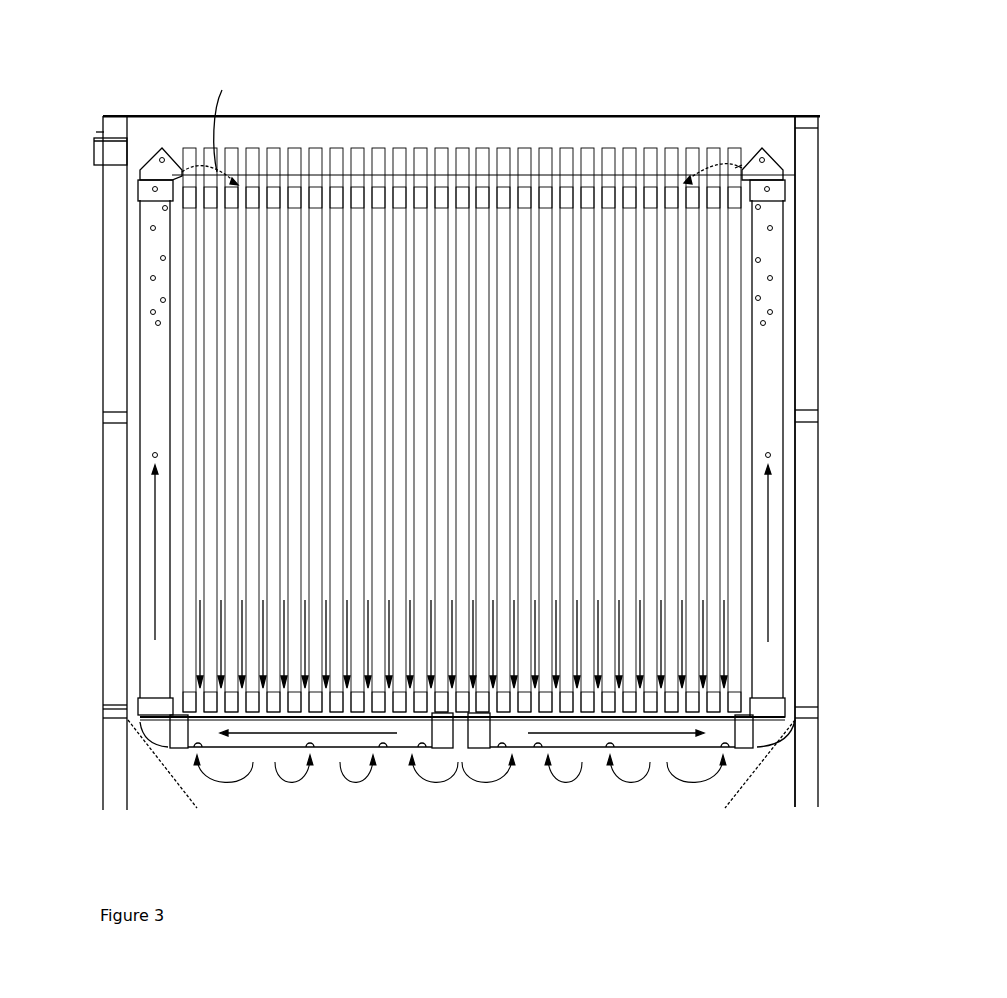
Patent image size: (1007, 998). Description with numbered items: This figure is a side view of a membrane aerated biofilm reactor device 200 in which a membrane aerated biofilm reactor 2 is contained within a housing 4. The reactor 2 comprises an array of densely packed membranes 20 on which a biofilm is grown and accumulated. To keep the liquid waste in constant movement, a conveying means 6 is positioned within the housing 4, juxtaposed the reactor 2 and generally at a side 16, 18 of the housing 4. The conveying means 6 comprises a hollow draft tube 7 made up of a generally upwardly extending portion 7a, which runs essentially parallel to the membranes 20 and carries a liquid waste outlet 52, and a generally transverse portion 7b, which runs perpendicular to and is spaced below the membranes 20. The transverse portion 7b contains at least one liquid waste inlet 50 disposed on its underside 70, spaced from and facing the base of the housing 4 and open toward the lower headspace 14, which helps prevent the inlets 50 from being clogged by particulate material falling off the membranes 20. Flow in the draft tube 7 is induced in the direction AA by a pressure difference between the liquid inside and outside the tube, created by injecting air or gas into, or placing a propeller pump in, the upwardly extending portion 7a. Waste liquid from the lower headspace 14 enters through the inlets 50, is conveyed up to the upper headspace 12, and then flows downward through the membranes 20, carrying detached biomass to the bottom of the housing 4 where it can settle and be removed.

The MABR device 200 is at (461, 64).
The housing 4 is at (656, 115).
The upper headspace 12 is at (367, 128).
The array of densely packed membranes 20 is at (441, 148).
The membrane aerated biofilm reactor 2 is at (375, 648).
The liquid waste outlet 52 is at (160, 148).
The draft tube 7 is at (150, 163).
The upwardly extending portion of the draft tube 7a is at (148, 340).
The transverse portion of the draft tube 7b is at (187, 748).
The side of the housing 16 is at (133, 250).
The side of the housing 18 is at (792, 250).
The conveying means 6 is at (140, 630).
The flow direction AA is at (838, 572).
The lower headspace 14 is at (597, 820).
The underside of the transverse portion 70 is at (272, 747).
The liquid waste inlet 50 is at (383, 748).